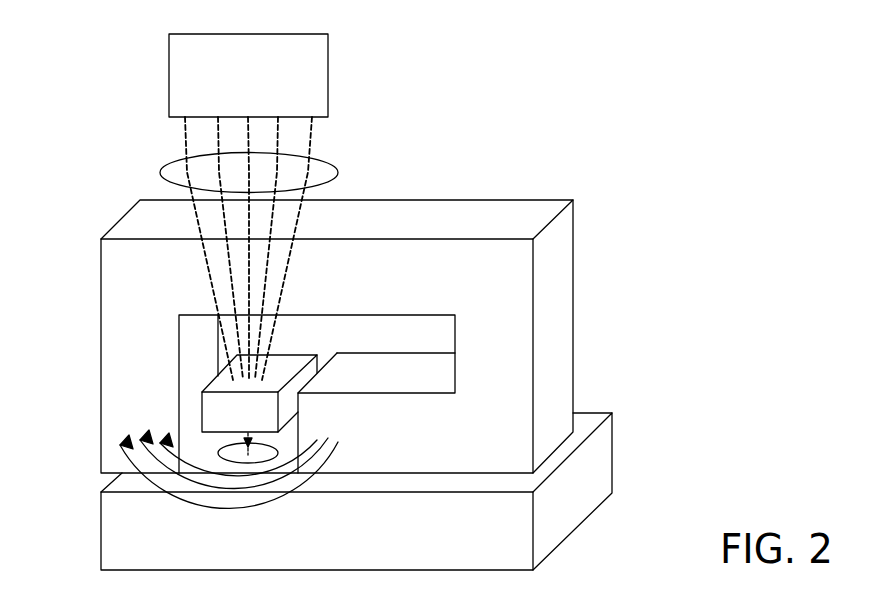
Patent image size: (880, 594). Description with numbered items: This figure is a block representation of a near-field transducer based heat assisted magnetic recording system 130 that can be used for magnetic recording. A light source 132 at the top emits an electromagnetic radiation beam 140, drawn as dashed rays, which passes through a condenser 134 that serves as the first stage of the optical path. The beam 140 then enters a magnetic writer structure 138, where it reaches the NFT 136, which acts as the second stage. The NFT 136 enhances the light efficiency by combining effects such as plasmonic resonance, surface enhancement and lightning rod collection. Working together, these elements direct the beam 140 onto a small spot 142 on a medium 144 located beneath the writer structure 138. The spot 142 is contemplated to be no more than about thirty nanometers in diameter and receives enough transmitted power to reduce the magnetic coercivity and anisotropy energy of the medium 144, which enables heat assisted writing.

The NFT-based HAMR system 130 is at (588, 70).
The light source 132 is at (266, 86).
The condenser 134 is at (160, 173).
The NFT 136 is at (302, 355).
The magnetic writer structure 138 is at (527, 463).
The electromagnetic radiation beam 140 is at (207, 267).
The spot 142 is at (272, 452).
The medium 144 is at (154, 545).